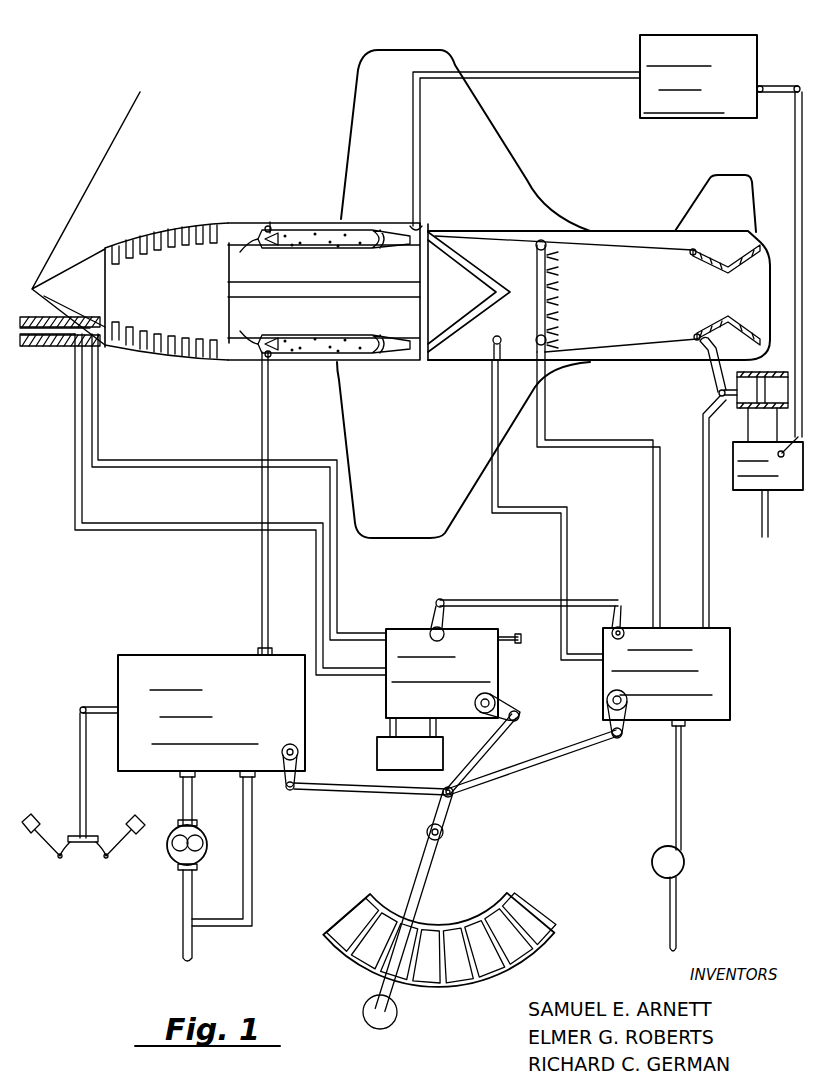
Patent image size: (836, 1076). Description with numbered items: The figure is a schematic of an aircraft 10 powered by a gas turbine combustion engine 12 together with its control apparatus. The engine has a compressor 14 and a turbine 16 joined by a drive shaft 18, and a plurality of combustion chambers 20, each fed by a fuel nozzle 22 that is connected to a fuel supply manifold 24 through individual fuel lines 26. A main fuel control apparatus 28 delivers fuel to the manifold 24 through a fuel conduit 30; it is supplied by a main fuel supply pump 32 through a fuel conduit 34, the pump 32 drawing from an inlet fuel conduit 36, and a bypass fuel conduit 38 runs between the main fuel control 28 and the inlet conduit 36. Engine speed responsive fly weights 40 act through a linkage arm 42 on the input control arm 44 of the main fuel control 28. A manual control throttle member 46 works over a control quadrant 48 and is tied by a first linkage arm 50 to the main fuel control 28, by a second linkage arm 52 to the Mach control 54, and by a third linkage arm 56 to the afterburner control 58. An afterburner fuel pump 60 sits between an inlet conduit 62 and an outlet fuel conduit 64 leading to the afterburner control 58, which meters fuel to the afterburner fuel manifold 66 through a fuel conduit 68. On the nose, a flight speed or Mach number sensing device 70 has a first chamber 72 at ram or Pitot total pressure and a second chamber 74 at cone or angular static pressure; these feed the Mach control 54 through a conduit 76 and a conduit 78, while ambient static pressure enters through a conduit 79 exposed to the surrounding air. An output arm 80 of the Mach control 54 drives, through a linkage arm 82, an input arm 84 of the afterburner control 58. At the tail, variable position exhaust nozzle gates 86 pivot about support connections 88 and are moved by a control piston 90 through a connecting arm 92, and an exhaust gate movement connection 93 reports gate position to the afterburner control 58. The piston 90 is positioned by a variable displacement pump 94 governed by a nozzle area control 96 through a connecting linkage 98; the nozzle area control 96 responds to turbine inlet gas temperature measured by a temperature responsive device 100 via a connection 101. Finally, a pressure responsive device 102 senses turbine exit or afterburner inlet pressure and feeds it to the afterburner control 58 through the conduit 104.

The aircraft 10 is at (350, 126).
The combustion engine 12 is at (358, 280).
The compressor 14 is at (177, 300).
The turbine 16 is at (431, 296).
The drive shaft 18 is at (284, 300).
The combustion chambers 20 is at (360, 228).
The fuel nozzle 22 is at (278, 230).
The fuel supply manifold 24 is at (266, 226).
The individual fuel lines 26 is at (250, 252).
The main fuel control apparatus 28 is at (176, 655).
The fuel conduit 30 is at (262, 552).
The main fuel supply pump 32 is at (172, 859).
The fuel conduit 34 is at (180, 794).
The inlet fuel conduit 36 is at (182, 946).
The bypass fuel conduit 38 is at (253, 878).
The engine speed responsive fly weights 40 is at (30, 838).
The linkage arm 42 is at (78, 769).
The input control arm 44 is at (107, 705).
The manual control throttle member 46 is at (384, 1023).
The control quadrant 48 is at (476, 908).
The first linkage arm 50 is at (335, 792).
The second linkage arm 52 is at (500, 753).
The Mach control 54 is at (505, 689).
The third linkage arm 56 is at (568, 762).
The afterburner control 58 is at (735, 701).
The afterburner fuel pump 60 is at (685, 866).
The inlet conduit 62 is at (678, 911).
The outlet fuel conduit 64 is at (683, 783).
The afterburner fuel manifold 66 is at (560, 263).
The fuel conduit 68 is at (653, 521).
The flight speed or Mach number sensing device 70 is at (72, 317).
The first chamber 72 is at (58, 348).
The second chamber 74 is at (34, 288).
The conduit 76 is at (162, 460).
The conduit 78 is at (98, 531).
The conduit 79 is at (517, 637).
The output arm 80 is at (431, 621).
The linkage arm 82 is at (525, 600).
The input arm 84 is at (619, 606).
The variable position exhaust nozzle gates 86 is at (735, 325).
The support connections 88 is at (690, 256).
The control piston 90 is at (767, 373).
The connecting arm 92 is at (708, 370).
The exhaust gate movement connection 93 is at (703, 455).
The variable displacement pump 94 is at (750, 490).
The nozzle area control 96 is at (722, 18).
The connecting linkage 98 is at (794, 130).
The temperature responsive device 100 is at (424, 228).
The connection 101 is at (534, 79).
The pressure responsive device 102 is at (500, 337).
The conduit 104 is at (492, 400).